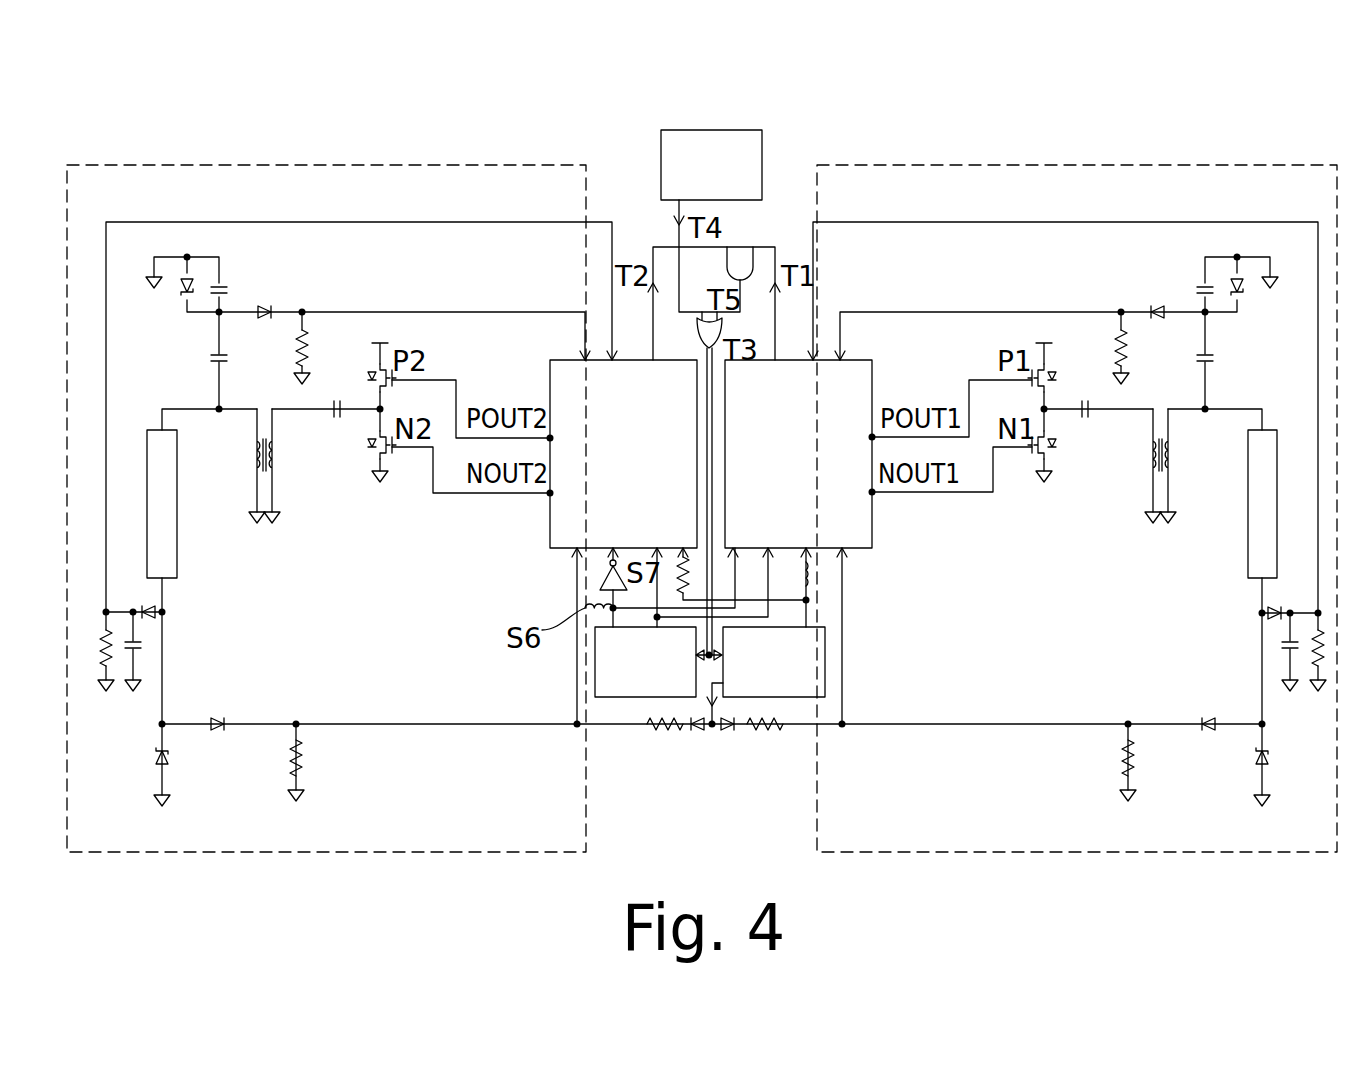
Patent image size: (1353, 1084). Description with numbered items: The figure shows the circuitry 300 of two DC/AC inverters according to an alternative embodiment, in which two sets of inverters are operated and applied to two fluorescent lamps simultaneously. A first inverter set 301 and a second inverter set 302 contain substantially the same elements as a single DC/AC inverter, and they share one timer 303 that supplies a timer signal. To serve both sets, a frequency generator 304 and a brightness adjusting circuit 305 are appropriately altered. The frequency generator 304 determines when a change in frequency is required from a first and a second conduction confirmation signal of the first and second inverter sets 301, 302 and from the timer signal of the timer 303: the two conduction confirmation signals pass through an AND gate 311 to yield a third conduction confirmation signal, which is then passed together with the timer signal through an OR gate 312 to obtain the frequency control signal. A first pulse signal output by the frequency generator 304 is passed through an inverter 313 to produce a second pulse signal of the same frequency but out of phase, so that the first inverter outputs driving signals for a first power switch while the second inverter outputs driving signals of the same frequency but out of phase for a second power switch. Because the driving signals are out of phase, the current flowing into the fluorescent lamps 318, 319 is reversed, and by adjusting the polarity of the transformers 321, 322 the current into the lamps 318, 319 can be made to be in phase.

The power supply circuit 300 is at (1207, 87).
The first inverter set 301 is at (550, 520).
The second inverter set 302 is at (855, 520).
The timer 303 is at (728, 131).
The frequency generator 304 is at (605, 697).
The brightness adjusting circuit 305 is at (790, 690).
The AND gate 311 is at (752, 267).
The OR gate 312 is at (698, 331).
The inverter 313 is at (605, 576).
The fluorescent lamp 318 is at (1257, 540).
The fluorescent lamp 319 is at (163, 540).
The transformer 321 is at (1138, 466).
The transformer 322 is at (290, 466).